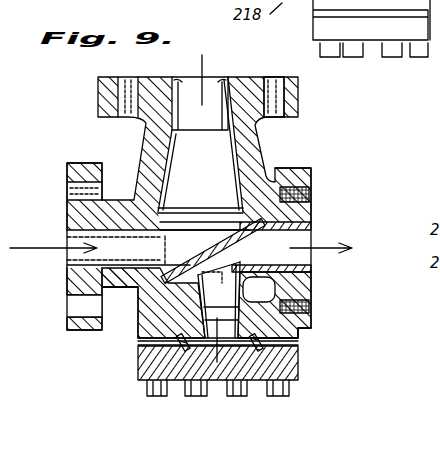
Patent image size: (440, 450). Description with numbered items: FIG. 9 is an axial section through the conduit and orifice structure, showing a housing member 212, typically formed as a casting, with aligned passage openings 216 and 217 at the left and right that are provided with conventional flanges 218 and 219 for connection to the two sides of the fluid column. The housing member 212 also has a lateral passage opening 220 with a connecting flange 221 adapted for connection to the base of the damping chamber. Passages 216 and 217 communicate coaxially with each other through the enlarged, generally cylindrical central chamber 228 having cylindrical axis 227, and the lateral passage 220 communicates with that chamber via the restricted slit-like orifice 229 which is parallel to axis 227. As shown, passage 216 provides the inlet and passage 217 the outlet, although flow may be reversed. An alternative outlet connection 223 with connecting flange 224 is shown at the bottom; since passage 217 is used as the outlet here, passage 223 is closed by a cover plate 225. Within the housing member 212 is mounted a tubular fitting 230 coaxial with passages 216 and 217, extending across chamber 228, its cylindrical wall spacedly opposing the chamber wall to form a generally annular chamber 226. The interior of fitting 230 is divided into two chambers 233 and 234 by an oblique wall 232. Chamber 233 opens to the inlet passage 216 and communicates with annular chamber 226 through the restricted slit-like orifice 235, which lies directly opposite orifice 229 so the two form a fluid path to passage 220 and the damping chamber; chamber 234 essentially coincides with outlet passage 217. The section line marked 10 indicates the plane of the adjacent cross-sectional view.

The section line 10- 10 is at (238, 357).
The housing member 212 is at (264, 159).
The passage opening 216 is at (66, 262).
The passage opening 217 is at (306, 273).
The flange 218 is at (75, 337).
The flange 219 is at (304, 173).
The lateral passage opening 220 is at (186, 84).
The connecting flange 221 is at (298, 99).
The alternative outlet connection 223 is at (179, 398).
The connecting flange 224 is at (300, 334).
The cover plate 225 is at (300, 372).
The annular chamber 226 is at (219, 300).
The cylindrical axis 227 is at (139, 240).
The central chamber 228 is at (219, 272).
The restricted slit-like orifice 229 is at (218, 210).
The tubular fitting 230 is at (139, 316).
The oblique wall 232 is at (241, 244).
The chamber 233 is at (174, 251).
The chamber 234 is at (301, 248).
The restricted slit-like orifice 235 is at (172, 226).